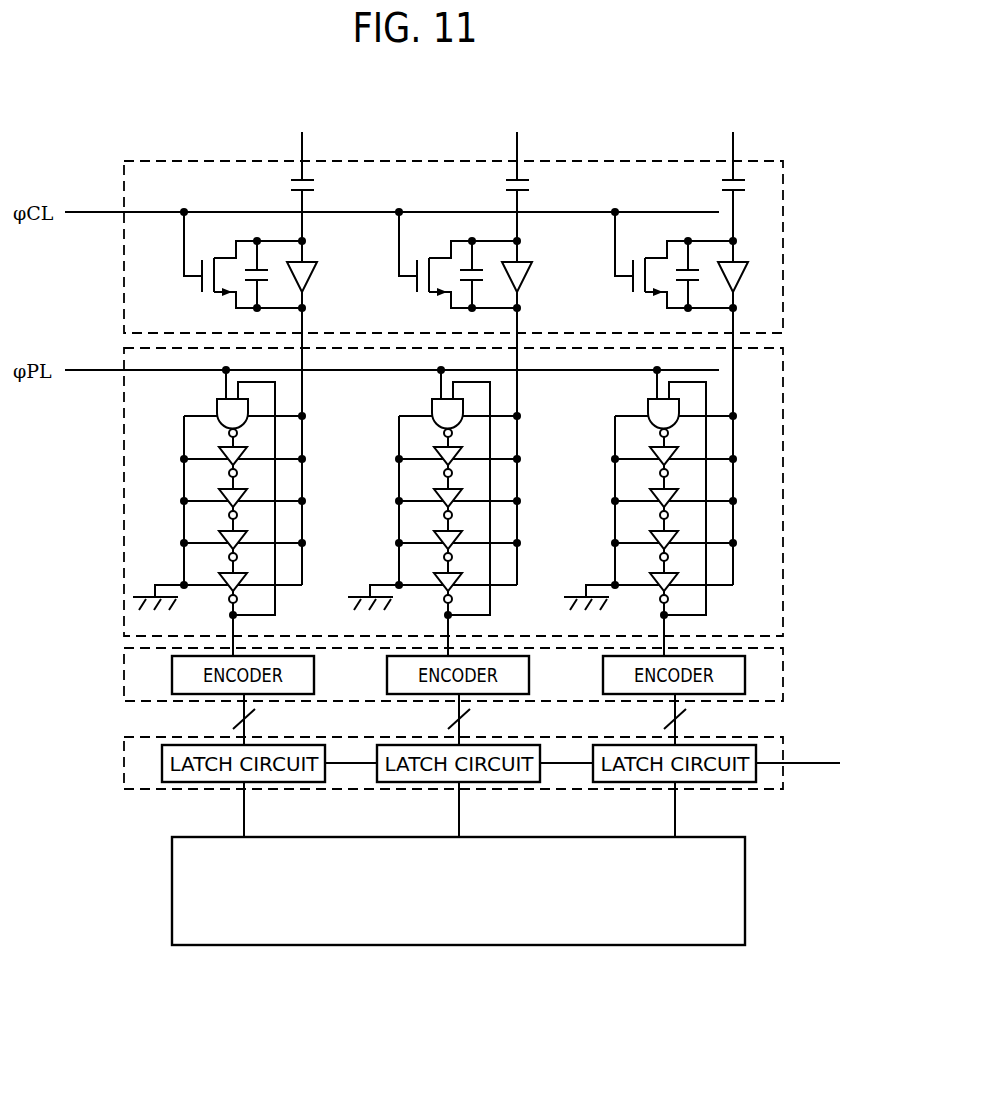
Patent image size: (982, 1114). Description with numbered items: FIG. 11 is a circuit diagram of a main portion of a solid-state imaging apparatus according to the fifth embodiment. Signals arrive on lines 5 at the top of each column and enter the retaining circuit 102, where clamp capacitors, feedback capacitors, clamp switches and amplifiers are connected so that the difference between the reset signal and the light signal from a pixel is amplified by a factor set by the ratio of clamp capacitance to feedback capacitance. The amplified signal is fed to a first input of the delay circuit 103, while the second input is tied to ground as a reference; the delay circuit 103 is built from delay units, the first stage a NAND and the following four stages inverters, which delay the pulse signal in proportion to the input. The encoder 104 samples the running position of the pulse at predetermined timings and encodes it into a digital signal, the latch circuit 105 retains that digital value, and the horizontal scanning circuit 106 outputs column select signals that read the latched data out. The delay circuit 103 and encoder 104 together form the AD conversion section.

The signal line 5 is at (302, 143).
The retaining circuit 102 is at (783, 225).
The delay circuit 103 is at (783, 402).
The encoder 104 is at (783, 668).
The latch circuit 105 is at (783, 778).
The horizontal scanning circuit 106 is at (745, 885).